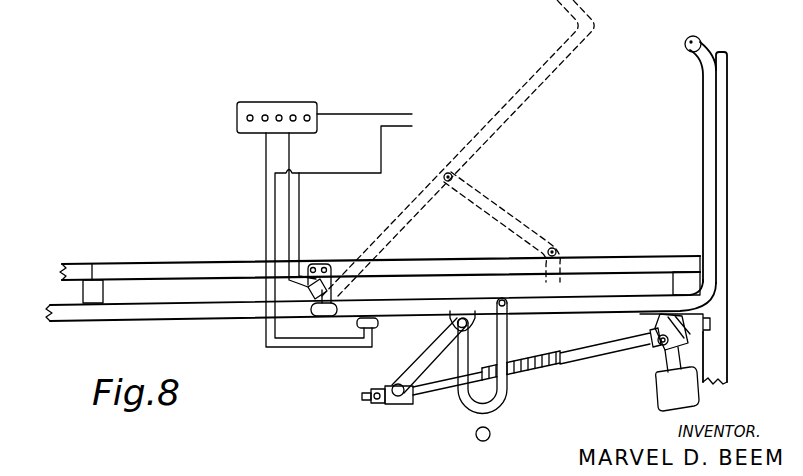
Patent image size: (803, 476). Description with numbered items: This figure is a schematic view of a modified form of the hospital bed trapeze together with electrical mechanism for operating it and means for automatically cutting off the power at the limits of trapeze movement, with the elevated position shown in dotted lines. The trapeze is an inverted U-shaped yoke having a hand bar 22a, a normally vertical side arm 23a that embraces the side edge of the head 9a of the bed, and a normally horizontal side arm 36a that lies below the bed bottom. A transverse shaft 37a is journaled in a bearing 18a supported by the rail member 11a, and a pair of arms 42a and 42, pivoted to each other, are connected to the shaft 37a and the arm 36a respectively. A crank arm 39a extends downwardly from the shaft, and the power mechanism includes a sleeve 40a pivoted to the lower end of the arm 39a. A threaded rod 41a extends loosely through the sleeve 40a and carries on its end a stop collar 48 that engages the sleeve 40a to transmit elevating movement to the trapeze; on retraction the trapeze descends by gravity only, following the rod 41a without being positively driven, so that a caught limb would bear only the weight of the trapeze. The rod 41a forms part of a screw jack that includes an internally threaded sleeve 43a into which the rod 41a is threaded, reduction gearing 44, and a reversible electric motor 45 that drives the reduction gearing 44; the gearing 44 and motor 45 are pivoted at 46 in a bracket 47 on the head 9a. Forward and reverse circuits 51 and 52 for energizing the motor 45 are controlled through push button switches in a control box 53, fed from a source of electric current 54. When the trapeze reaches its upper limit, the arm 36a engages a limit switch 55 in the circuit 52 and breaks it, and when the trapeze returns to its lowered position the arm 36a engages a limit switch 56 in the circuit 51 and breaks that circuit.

The head 9a is at (728, 65).
The rail member 11a is at (145, 317).
The bearing 18a is at (321, 316).
The hand bar 22a is at (698, 35).
The vertical side arm 23a is at (717, 147).
The horizontal side arm 36a is at (603, 300).
The transverse shaft 37a is at (456, 325).
The crank arm 39a is at (420, 364).
The sleeve 40a is at (400, 405).
The threaded rod 41a is at (443, 387).
The arm 42 is at (470, 430).
The arm 42a is at (510, 415).
The internally threaded sleeve 43a is at (583, 366).
The reduction gearing 44 is at (656, 324).
The electric motor 45 is at (667, 400).
The pivot 46 is at (659, 346).
The bracket 47 is at (683, 330).
The stop collar 48 is at (377, 404).
The forward circuit 51 is at (265, 152).
The reverse circuit 52 is at (290, 150).
The control box 53 is at (278, 101).
The source of electric current 54 is at (368, 142).
The limit switch 55 is at (333, 292).
The limit switch 56 is at (369, 318).